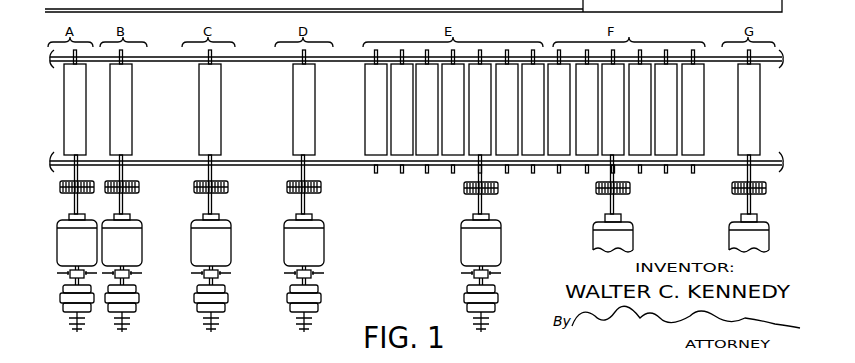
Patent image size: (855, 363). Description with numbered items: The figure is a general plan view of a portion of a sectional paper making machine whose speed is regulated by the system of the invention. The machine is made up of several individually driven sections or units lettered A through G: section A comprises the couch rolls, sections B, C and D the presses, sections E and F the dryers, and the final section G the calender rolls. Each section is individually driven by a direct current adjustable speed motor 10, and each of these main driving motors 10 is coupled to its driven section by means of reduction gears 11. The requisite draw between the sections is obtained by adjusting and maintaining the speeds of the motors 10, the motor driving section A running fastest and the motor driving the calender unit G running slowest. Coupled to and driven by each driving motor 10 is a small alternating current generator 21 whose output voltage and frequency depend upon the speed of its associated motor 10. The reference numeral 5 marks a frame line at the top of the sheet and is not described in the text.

The rail frame 5 is at (653, 12).
The direct current adjustable speed motor 10 is at (413, 249).
The reduction gears 11 is at (60, 188).
The alternating current generator 21 is at (63, 298).